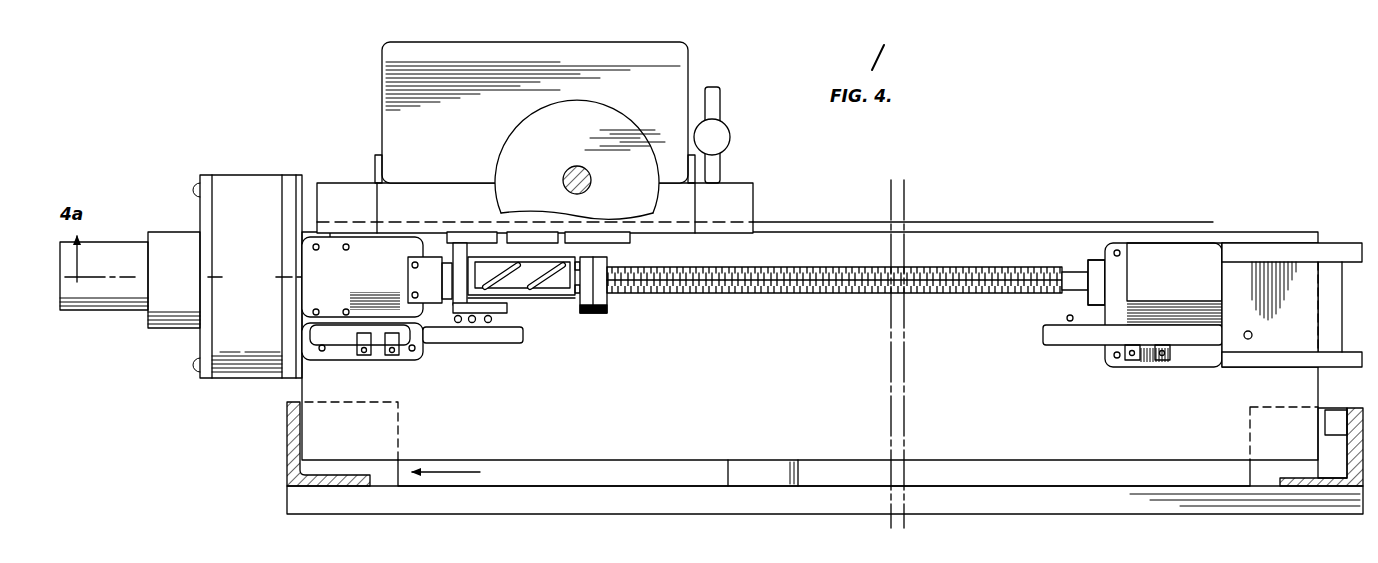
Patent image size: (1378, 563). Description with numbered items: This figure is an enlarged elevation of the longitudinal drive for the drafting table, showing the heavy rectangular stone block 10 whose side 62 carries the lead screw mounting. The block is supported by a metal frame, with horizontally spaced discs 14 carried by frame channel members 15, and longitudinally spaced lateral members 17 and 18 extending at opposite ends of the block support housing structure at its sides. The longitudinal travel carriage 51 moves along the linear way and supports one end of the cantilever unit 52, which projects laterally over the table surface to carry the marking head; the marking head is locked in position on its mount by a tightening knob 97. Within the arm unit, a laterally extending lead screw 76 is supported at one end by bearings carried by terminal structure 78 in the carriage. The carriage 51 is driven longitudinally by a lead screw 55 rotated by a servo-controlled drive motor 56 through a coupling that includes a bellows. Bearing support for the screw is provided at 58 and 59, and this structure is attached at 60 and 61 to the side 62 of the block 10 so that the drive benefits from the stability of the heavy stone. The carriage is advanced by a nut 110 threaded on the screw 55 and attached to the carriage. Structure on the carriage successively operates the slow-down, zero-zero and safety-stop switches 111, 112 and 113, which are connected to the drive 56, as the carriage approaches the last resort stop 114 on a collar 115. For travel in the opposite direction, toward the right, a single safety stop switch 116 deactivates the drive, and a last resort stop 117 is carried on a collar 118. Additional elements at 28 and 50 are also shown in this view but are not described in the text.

The stone block 10 is at (810, 346).
The discs 14 is at (730, 474).
The frame channel members 15 is at (590, 503).
The lateral member 17 is at (1310, 480).
The lateral member 18 is at (288, 460).
The spacer block 28 is at (1343, 378).
The vertical guide bars 50 is at (912, 230).
The carriage 51 is at (758, 186).
The cantilever unit 52 is at (694, 55).
The lead screw 55 is at (808, 290).
The drive motor 56 is at (102, 295).
The bearing support 58 is at (248, 276).
The bearing support 59 is at (1180, 265).
The attachment 60 is at (342, 365).
The attachment 61 is at (1292, 305).
The side of block 62 is at (985, 440).
The lead screw 76 is at (566, 174).
The terminal structure 78 is at (505, 130).
The tightening knob 97 is at (730, 137).
The nut 110 is at (592, 305).
The slow-down switch 111 is at (505, 328).
The 0-0 switch 112 is at (492, 332).
The safety-stop switch 113 is at (462, 325).
The last resort stop 114 is at (453, 248).
The collar 115 is at (425, 280).
The safety stop switch 116 is at (1070, 320).
The last resort stop 117 is at (1085, 260).
The collar 118 is at (1095, 294).